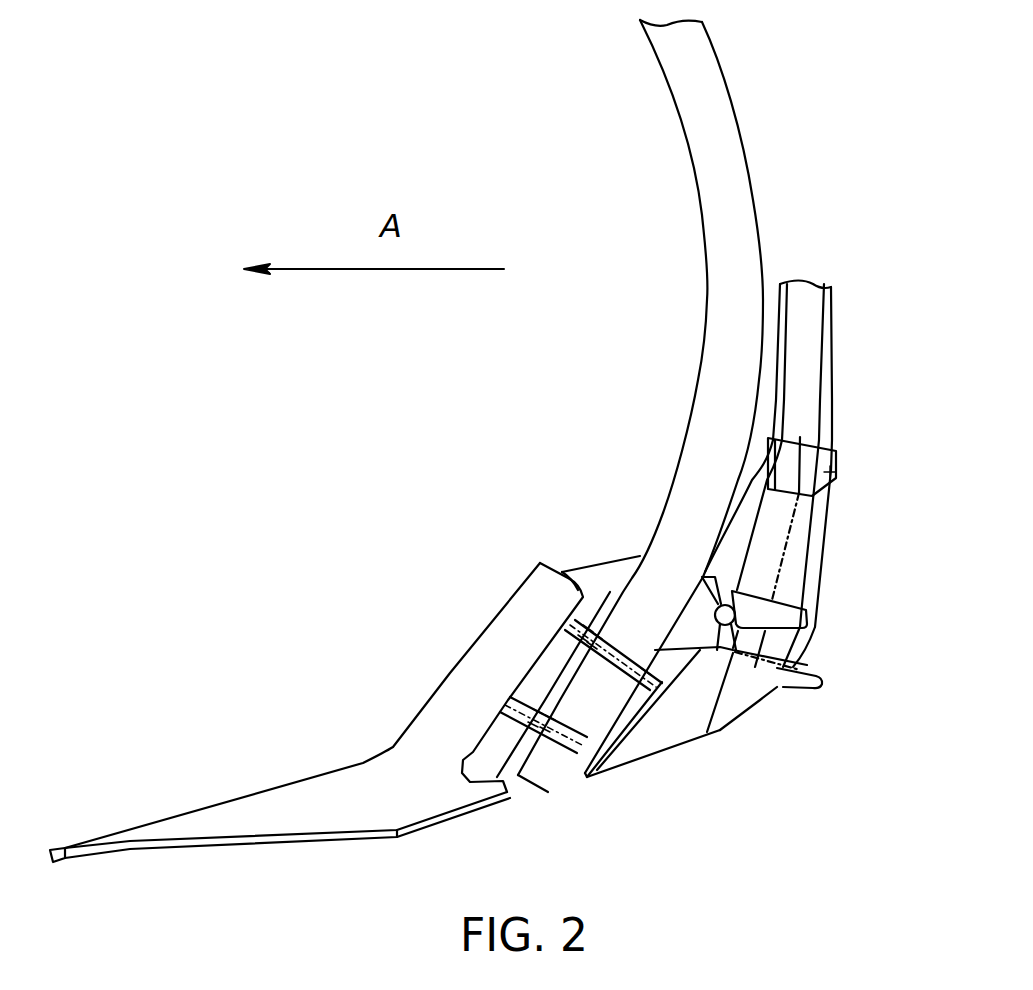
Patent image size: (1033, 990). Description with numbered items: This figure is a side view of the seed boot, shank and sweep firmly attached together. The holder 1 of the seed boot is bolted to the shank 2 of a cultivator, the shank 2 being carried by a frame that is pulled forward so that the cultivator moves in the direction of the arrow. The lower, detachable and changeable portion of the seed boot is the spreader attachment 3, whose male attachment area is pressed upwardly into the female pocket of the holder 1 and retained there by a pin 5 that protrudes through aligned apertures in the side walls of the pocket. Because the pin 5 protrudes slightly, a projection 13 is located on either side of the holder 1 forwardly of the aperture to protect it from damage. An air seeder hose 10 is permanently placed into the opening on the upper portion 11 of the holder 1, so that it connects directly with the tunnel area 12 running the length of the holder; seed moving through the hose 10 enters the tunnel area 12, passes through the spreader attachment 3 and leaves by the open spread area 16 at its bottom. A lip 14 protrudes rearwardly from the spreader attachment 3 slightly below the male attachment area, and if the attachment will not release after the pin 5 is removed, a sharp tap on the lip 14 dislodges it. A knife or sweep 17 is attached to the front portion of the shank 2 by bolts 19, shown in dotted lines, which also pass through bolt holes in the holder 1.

The seed boot holder 1 is at (823, 587).
The shank 2 is at (740, 118).
The spreader attachment 3 is at (718, 700).
The pin 5 is at (807, 628).
The air seeder hose 10 is at (837, 357).
The upper portion 11 is at (810, 448).
The tunnel area 12 is at (813, 533).
The projection 13 is at (697, 610).
The lip 14 is at (820, 685).
The open spread area 16 is at (673, 745).
The knife or sweep 17 is at (463, 652).
The bolts 19 is at (634, 624).